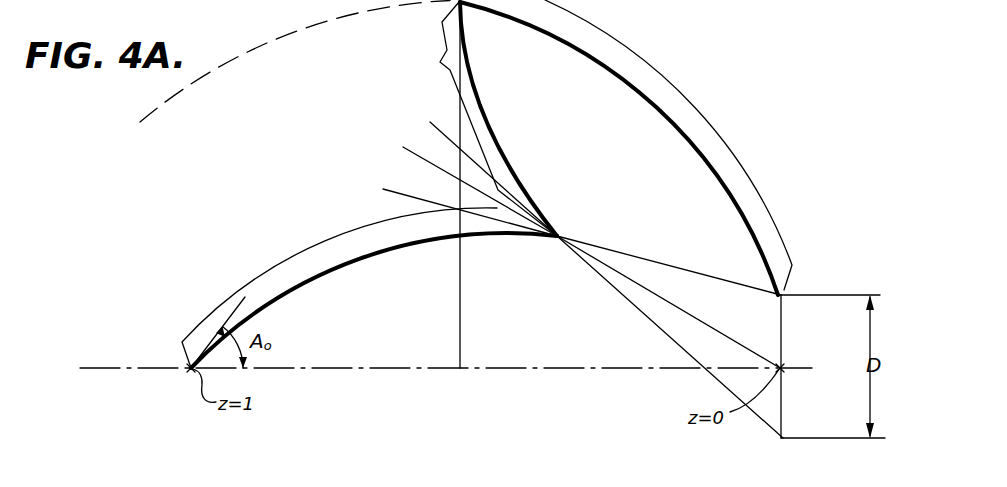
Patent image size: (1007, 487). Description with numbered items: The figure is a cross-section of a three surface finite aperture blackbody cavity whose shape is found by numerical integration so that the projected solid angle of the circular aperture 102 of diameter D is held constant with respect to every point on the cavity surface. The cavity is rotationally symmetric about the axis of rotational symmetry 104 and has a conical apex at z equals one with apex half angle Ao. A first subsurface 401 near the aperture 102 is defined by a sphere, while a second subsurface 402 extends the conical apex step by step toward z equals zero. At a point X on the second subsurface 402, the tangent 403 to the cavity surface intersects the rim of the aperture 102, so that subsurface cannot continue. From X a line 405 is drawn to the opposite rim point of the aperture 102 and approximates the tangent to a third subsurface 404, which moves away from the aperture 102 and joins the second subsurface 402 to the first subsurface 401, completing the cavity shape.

The first subsurface 401 is at (668, 72).
The second subsurface 402 is at (306, 250).
The tangent 403 is at (688, 270).
The third subsurface 404 is at (440, 62).
The line 405 is at (643, 315).
The aperture 102 is at (782, 335).
The axis of rotational symmetry 104 is at (430, 369).